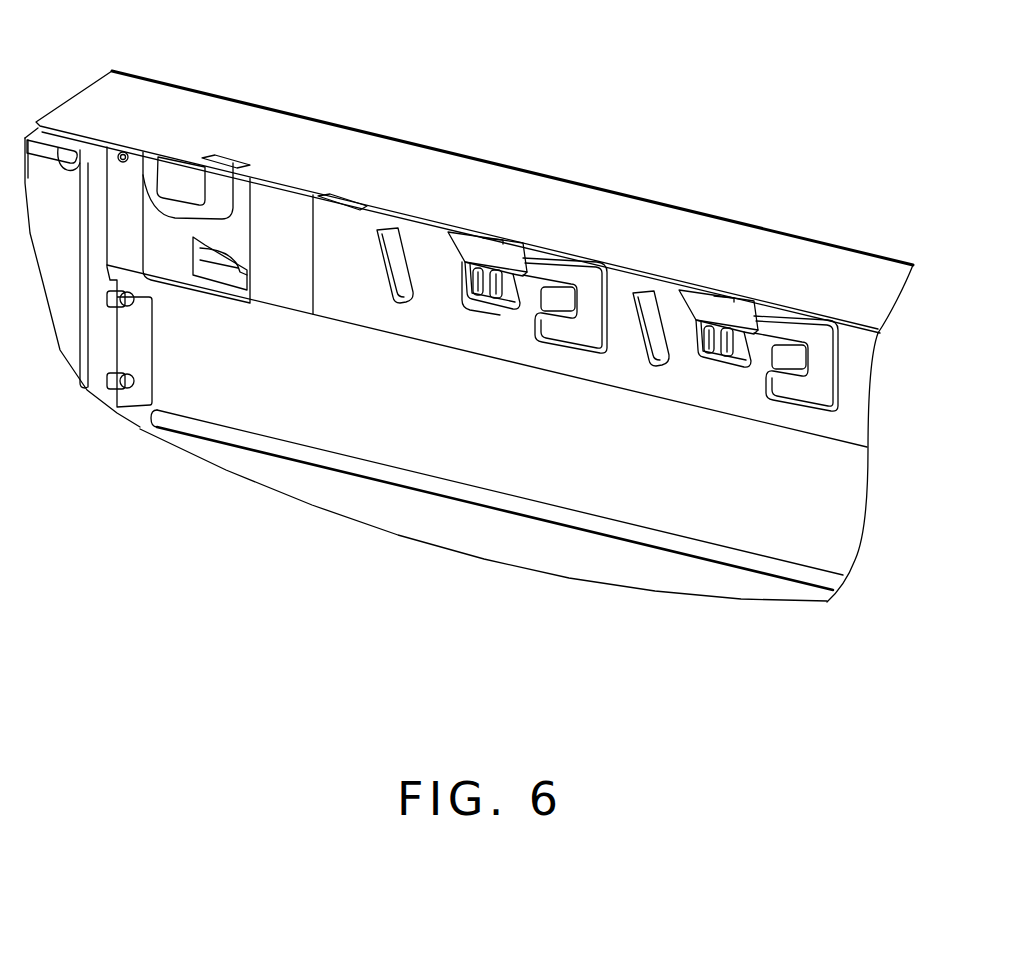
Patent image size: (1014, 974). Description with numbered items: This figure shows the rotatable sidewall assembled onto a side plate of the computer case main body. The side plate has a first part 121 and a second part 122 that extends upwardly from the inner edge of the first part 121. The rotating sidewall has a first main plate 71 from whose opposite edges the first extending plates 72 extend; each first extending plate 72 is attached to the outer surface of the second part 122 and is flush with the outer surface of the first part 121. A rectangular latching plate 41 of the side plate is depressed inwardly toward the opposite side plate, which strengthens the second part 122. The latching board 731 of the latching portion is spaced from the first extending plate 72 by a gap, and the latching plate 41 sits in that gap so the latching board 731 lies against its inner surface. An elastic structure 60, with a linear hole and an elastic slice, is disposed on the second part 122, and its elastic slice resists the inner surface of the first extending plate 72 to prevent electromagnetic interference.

The first main plate 71 is at (192, 117).
The elastic structure 60 is at (388, 252).
The first extending plate 72 is at (490, 257).
The latching plate 41 is at (513, 302).
The latching board 731 is at (465, 305).
The first part 121 is at (563, 430).
The second part 122 is at (855, 363).